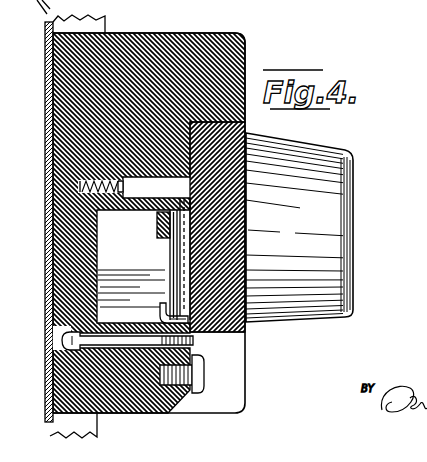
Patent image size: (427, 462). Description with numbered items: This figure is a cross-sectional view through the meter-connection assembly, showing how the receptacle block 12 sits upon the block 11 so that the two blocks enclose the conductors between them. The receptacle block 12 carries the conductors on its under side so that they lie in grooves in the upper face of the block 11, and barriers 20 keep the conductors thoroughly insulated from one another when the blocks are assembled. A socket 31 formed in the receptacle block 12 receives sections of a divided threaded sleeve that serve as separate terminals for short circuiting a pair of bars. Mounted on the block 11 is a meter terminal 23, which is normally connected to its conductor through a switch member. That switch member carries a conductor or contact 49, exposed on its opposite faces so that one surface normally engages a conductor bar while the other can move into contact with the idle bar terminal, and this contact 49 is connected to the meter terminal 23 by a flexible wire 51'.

The block 11 is at (135, 33).
The receptacle block 12 is at (247, 230).
The barriers 20 is at (245, 60).
The meter terminal 23 is at (197, 353).
The socket 31 is at (326, 146).
The conductor or contact 49 is at (157, 230).
The flexible wire 51' is at (150, 265).